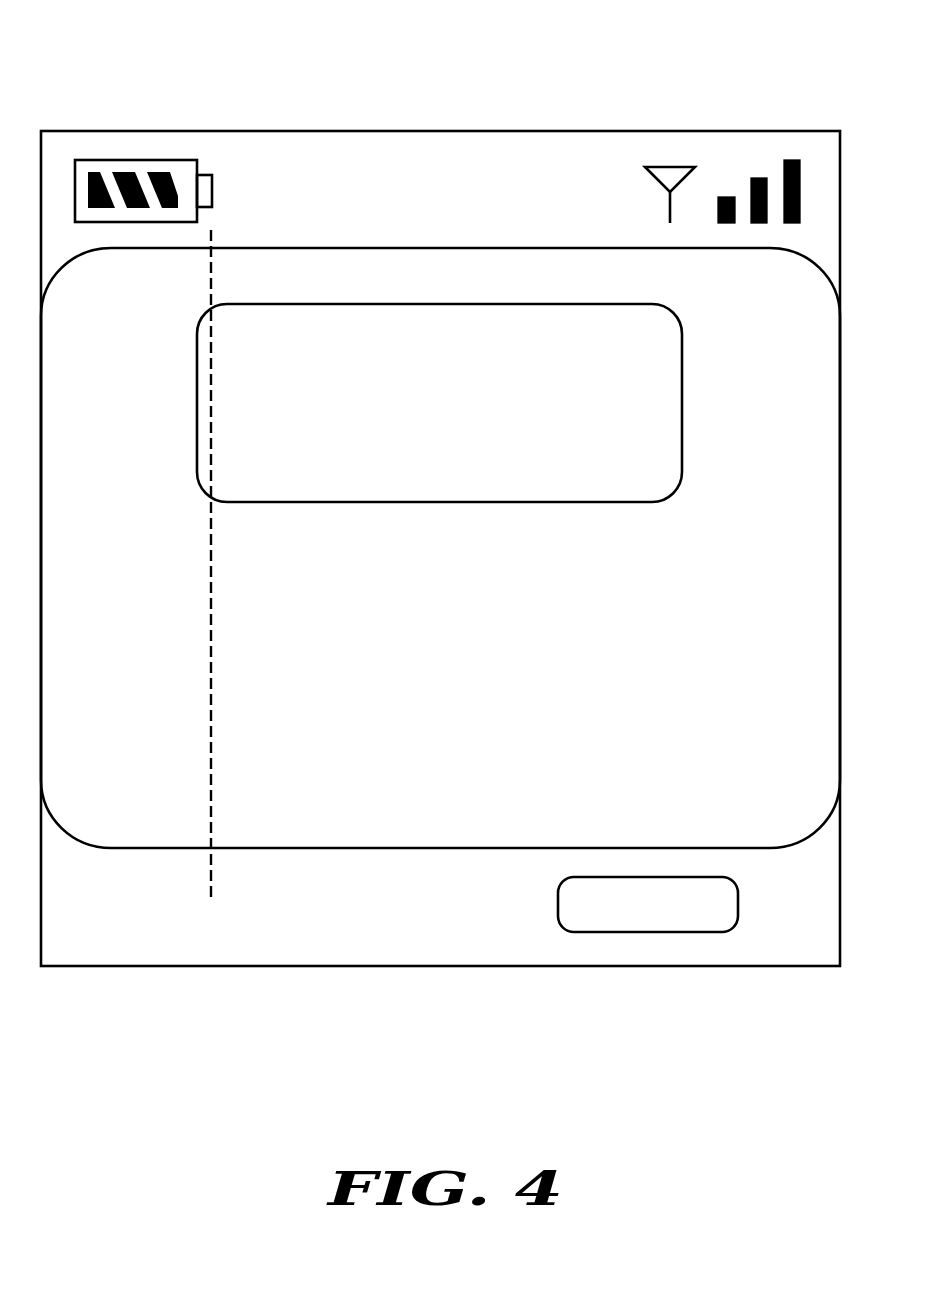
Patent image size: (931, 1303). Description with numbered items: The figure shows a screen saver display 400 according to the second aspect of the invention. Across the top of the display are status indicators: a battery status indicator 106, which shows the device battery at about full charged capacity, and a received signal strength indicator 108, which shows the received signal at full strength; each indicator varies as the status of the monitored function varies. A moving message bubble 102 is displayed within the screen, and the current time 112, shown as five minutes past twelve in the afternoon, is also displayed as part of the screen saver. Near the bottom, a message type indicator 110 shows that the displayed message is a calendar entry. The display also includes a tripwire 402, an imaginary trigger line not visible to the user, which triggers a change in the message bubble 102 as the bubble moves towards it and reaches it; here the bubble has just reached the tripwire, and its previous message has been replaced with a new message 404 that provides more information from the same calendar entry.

The screen saver display 400 is at (104, 33).
The message bubble 102 is at (662, 515).
The battery status indicator 106 is at (225, 155).
The received signal strength indicator 108 is at (706, 146).
The tripwire 402 is at (238, 729).
The reminder popup window 404 is at (473, 377).
The current time 112 is at (508, 626).
The message type indicator 110 is at (634, 950).